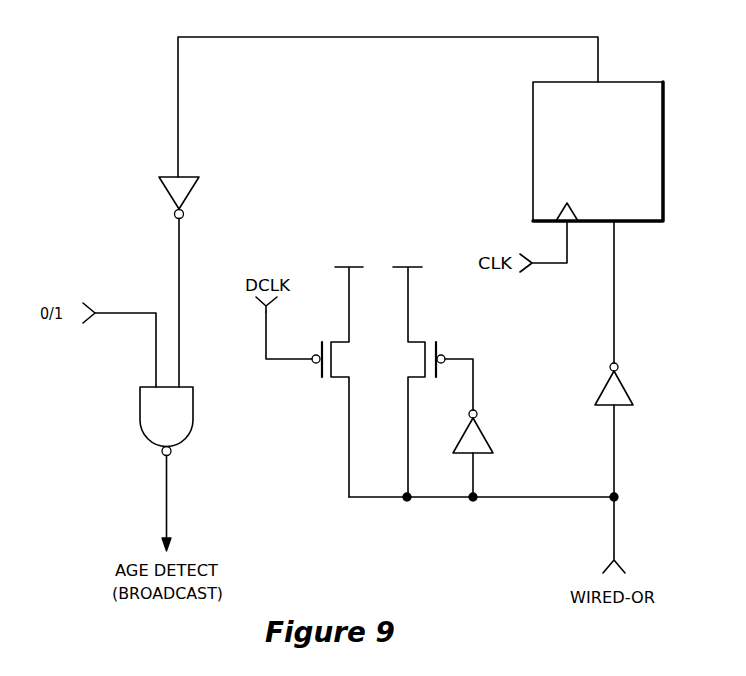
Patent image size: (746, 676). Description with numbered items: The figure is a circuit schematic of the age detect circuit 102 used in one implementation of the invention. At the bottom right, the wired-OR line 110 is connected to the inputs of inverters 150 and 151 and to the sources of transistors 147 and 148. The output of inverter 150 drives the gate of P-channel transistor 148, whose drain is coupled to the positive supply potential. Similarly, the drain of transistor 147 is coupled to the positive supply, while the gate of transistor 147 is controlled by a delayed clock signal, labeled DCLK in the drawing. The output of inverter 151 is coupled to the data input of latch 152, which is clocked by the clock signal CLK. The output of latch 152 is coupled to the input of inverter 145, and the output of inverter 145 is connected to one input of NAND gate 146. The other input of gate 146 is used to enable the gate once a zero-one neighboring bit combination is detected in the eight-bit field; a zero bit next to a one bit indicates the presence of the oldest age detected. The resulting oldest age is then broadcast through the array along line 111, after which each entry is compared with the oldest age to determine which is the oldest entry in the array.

The age detect circuit 102 is at (105, 109).
The inverter 145 is at (191, 191).
The NAND gate 146 is at (181, 423).
The transistor 147 is at (327, 380).
The P-channel transistor 148 is at (413, 360).
The inverter 150 is at (483, 433).
The inverter 151 is at (628, 385).
The latch 152 is at (614, 160).
The line 111 is at (169, 505).
The wired-OR line 110 is at (617, 530).